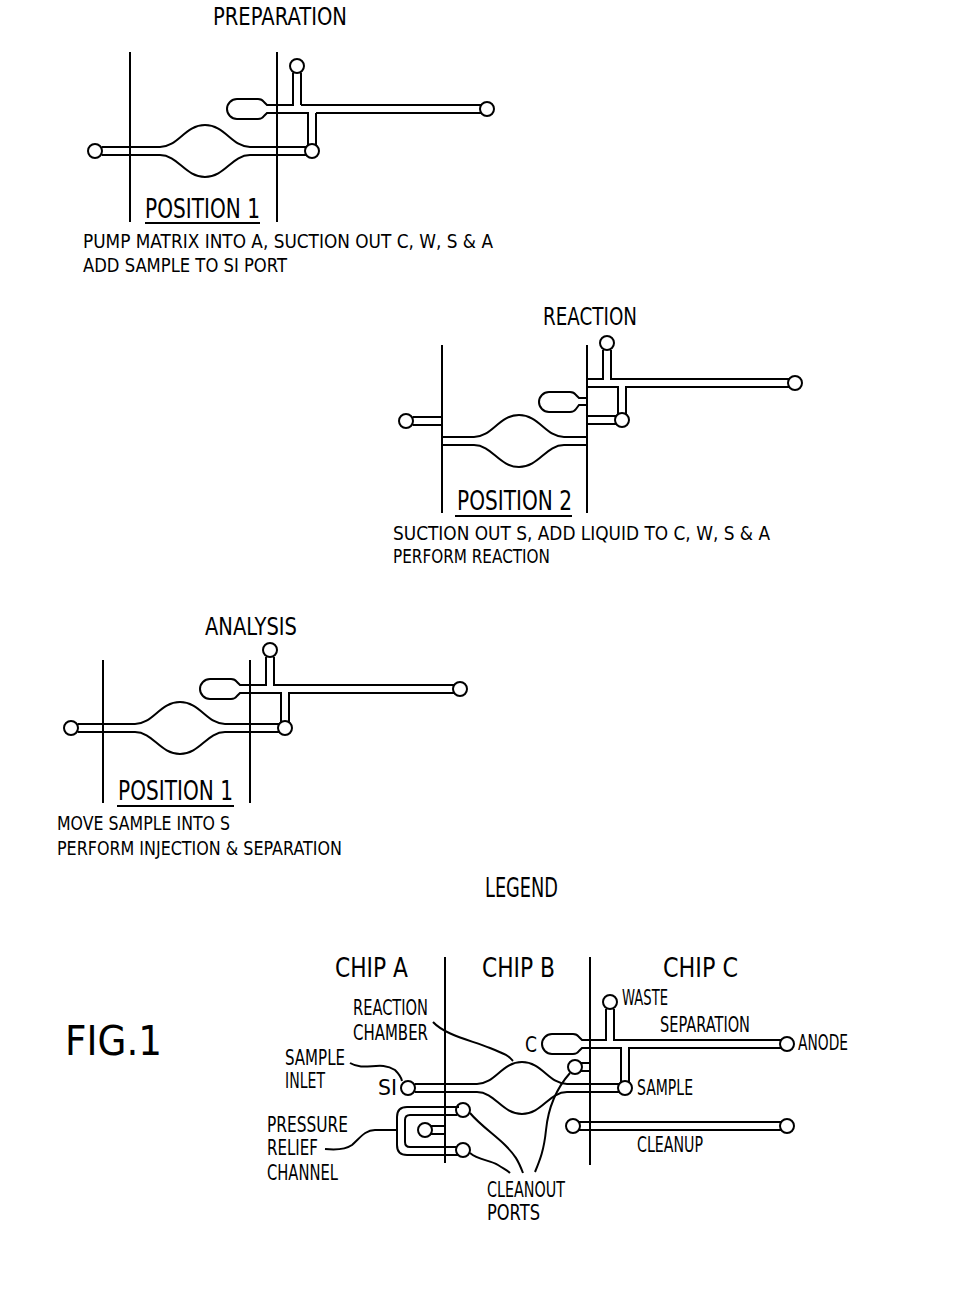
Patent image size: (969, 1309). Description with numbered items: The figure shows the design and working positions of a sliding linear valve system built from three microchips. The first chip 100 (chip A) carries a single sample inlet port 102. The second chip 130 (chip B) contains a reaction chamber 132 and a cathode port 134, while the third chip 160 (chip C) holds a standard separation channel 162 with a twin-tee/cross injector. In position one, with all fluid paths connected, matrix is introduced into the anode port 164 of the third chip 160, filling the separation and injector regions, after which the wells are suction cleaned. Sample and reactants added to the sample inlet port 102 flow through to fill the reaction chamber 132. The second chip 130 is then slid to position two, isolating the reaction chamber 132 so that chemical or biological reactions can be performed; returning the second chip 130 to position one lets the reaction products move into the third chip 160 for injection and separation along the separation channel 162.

The first chip (chip A) 100 is at (113, 78).
The sample inlet port 102 is at (93, 144).
The second chip (chip B) 130 is at (186, 78).
The reaction chamber 132 is at (203, 152).
The cathode port 134 is at (231, 104).
The third chip (chip C) 160 is at (395, 78).
The separation channel 162 is at (400, 104).
The anode port 164 is at (492, 102).